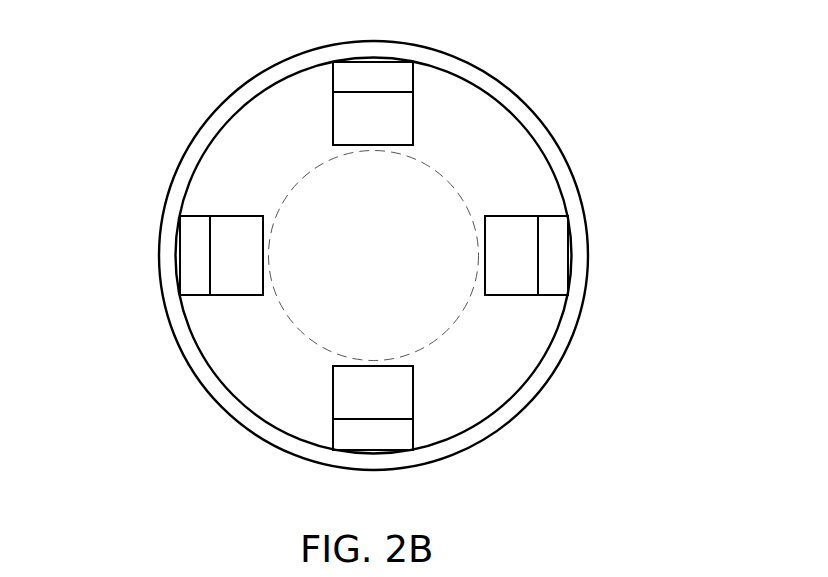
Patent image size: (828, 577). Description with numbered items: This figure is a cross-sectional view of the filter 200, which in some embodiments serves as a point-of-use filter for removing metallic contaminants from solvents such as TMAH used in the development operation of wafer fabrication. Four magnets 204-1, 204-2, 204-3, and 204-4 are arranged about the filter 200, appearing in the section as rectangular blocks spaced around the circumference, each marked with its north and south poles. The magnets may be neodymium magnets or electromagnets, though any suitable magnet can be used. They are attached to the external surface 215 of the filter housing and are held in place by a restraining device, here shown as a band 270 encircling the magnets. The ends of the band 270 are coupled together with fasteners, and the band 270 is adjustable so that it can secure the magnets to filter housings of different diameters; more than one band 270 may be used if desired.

The filter 200 is at (453, 175).
The magnet 204-1 is at (568, 258).
The magnet 204-2 is at (413, 103).
The magnet 204-3 is at (180, 262).
The magnet 204-4 is at (413, 405).
The external surface 215 is at (455, 340).
The band 270 is at (580, 318).